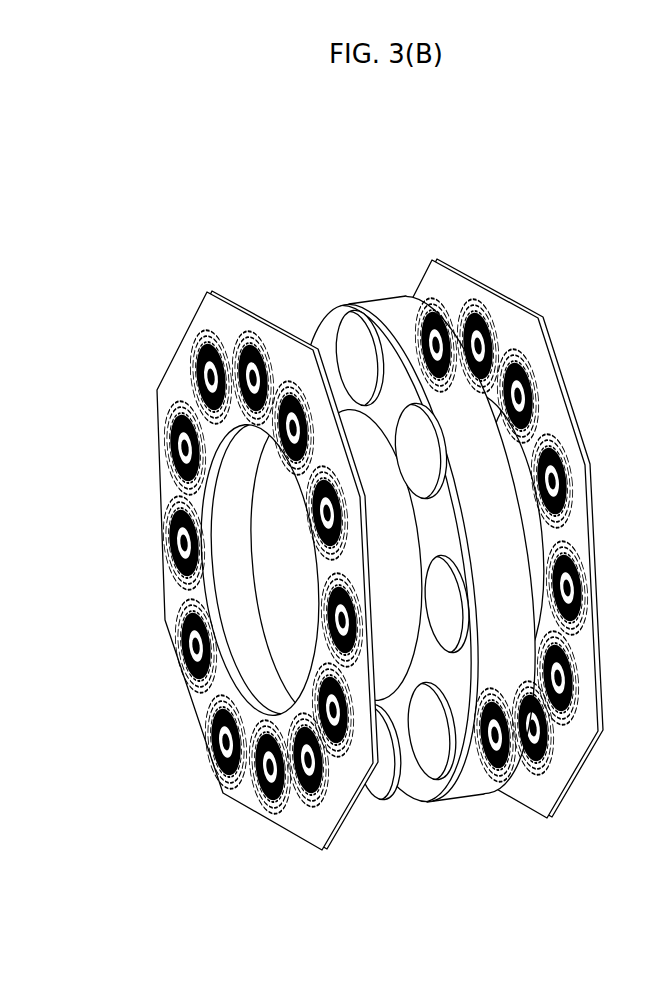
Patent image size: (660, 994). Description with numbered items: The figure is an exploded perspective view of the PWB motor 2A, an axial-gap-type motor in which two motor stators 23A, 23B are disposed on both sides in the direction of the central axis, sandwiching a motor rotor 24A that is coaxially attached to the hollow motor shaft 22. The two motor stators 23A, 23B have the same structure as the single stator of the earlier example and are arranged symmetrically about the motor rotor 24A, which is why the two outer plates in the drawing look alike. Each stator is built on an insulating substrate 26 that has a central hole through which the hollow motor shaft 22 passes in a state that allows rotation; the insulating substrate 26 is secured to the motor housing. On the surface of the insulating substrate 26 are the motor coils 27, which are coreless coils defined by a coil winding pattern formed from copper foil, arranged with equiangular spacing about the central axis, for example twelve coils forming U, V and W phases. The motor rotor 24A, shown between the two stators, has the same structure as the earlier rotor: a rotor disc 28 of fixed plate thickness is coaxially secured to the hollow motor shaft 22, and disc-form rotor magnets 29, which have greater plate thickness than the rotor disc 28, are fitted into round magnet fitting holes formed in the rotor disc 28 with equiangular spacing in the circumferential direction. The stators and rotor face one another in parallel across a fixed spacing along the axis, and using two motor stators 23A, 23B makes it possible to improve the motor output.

The PWB motor 2A is at (418, 166).
The hollow motor shaft 22 is at (251, 633).
The motor stator 23A is at (260, 296).
The motor stator 23B is at (460, 258).
The motor rotor 24A is at (355, 292).
The insulating substrate 26 is at (265, 828).
The motor coil 27 is at (301, 812).
The rotor disc 28 is at (449, 796).
The rotor magnet 29 is at (419, 760).